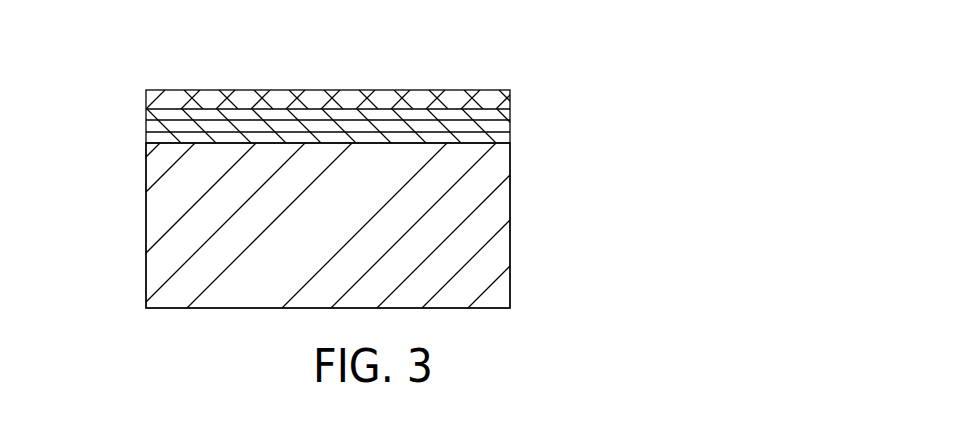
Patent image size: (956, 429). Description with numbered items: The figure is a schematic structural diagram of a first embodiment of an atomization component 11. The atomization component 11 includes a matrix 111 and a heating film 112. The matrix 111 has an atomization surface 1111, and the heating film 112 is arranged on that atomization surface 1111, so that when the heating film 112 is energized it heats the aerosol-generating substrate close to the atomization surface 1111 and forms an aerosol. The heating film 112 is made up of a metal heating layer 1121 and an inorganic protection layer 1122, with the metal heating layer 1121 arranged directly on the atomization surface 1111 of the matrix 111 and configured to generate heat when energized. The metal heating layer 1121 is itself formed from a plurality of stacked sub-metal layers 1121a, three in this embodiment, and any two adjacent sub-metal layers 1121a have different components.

The atomization component 11 is at (109, 74).
The matrix 111 is at (458, 258).
The atomization surface 1111 is at (207, 145).
The heating film 112 is at (428, 122).
The metal heating layer 1121 is at (404, 137).
The sub-metal layer 1121a is at (511, 113).
The inorganic protection layer 1122 is at (470, 99).